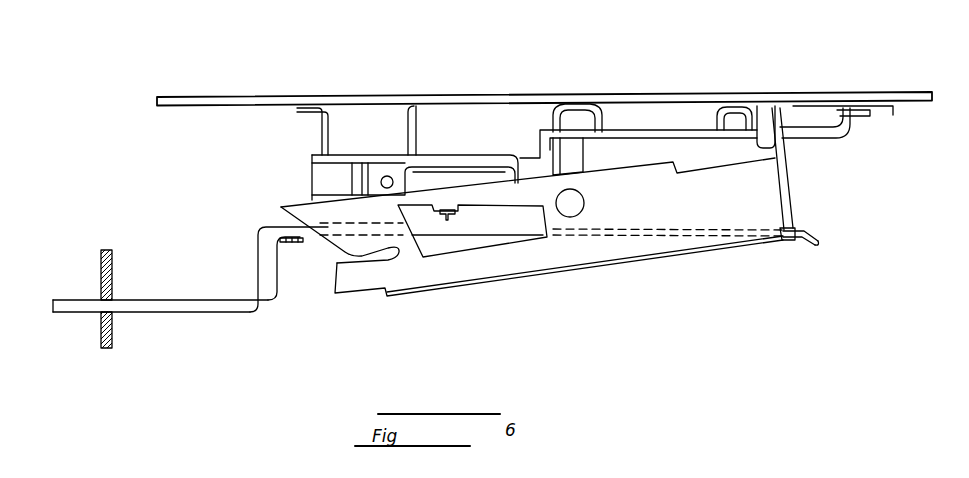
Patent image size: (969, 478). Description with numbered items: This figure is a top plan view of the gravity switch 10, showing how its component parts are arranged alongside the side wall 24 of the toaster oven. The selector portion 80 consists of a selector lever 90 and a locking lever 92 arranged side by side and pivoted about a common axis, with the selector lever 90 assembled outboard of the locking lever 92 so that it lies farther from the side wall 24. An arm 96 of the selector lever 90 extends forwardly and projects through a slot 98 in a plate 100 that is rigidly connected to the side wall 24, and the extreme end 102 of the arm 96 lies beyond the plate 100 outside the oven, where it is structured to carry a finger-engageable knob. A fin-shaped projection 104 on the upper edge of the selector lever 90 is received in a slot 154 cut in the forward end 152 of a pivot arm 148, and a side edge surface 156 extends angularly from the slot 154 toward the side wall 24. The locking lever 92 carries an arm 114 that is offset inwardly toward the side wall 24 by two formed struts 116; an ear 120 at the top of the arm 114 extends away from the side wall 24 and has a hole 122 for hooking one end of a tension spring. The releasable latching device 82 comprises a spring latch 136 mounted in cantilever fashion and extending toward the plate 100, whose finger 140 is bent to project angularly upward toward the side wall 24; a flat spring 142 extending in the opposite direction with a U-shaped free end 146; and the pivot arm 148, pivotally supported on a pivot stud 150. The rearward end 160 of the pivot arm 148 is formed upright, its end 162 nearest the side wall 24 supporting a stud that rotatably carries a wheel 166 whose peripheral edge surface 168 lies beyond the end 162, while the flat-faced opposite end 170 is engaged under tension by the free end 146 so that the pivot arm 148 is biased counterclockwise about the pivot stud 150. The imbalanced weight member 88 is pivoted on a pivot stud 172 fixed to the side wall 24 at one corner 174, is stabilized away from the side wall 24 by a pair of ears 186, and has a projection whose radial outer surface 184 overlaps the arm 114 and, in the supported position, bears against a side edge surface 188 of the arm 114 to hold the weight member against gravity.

The gravity switch 10 is at (208, 157).
The side wall 24 is at (190, 108).
The selector portion 80 is at (225, 235).
The releasable latching device 82 is at (450, 165).
The imbalanced weight member 88 is at (674, 120).
The selector lever 90 is at (272, 231).
The locking lever 92 is at (276, 226).
The arm 96 is at (162, 312).
The slot 98 is at (112, 300).
The plate 100 is at (100, 335).
The extreme end 102 is at (82, 298).
The fin-shaped projection 104 is at (292, 243).
The arm 114 is at (348, 153).
The formed struts 116 is at (322, 181).
The ear 120 is at (373, 164).
The hole 122 is at (388, 176).
The spring latch 136 is at (518, 226).
The finger 140 is at (447, 222).
The flat spring 142 is at (690, 236).
The free end 146 is at (818, 243).
The pivot arm 148 is at (633, 282).
The pivot stud 150 is at (585, 203).
The forward end 152 is at (390, 291).
The slot 154 is at (324, 243).
The side edge surface 156 is at (322, 262).
The rearward end 160 is at (795, 182).
The end 162 is at (805, 117).
The wheel 166 is at (790, 110).
The peripheral edge surface 168 is at (767, 106).
The opposite end 170 is at (790, 240).
The pivot stud 172 is at (855, 117).
The corner 174 is at (890, 113).
The radial outer surface 184 is at (540, 158).
The ears 186 is at (580, 120).
The side edge surface 188 is at (480, 157).